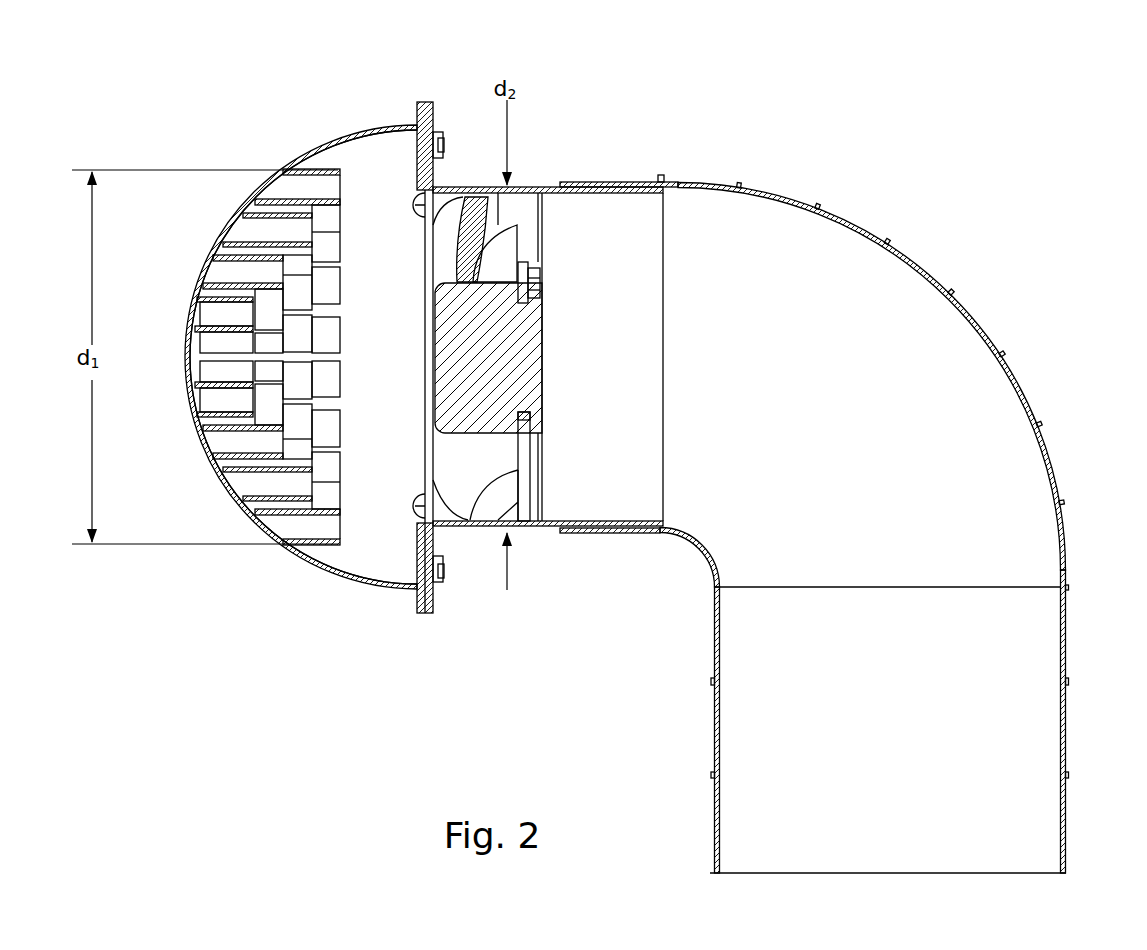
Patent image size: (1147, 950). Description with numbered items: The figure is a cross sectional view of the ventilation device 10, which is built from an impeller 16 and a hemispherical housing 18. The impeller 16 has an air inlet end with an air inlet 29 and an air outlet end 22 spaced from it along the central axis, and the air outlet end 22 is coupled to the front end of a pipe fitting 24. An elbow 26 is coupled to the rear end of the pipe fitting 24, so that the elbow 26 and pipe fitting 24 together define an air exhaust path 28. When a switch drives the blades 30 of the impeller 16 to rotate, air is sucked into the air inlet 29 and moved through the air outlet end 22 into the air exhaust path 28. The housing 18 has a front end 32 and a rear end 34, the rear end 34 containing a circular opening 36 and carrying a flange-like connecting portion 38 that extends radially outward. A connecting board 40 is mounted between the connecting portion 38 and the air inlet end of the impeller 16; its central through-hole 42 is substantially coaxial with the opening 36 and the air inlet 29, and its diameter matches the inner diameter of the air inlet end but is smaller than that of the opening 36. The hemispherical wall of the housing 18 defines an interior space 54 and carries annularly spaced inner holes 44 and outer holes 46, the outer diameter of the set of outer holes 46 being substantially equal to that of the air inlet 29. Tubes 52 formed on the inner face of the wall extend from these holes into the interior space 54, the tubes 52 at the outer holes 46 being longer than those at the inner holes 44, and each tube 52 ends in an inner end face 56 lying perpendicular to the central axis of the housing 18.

The ventilation device 10 is at (443, 92).
The impeller 16 is at (532, 523).
The housing 18 is at (342, 139).
The air outlet end 22 is at (535, 189).
The pipe fitting 24 is at (623, 184).
The elbow 26 is at (1065, 527).
The air exhaust path 28 is at (1017, 472).
The air inlet 29 is at (445, 197).
The blades 30 is at (530, 350).
The front end 32 is at (197, 384).
The rear end 34 is at (407, 124).
The opening 36 is at (413, 432).
The connecting portion 38 is at (417, 615).
The connecting board 40 is at (433, 615).
The through-hole 42 is at (427, 480).
The inner holes 44 is at (213, 313).
The outer holes 46 is at (260, 185).
The tubes 52 is at (315, 168).
The interior space 54 is at (367, 155).
The inner end face 56 is at (308, 500).